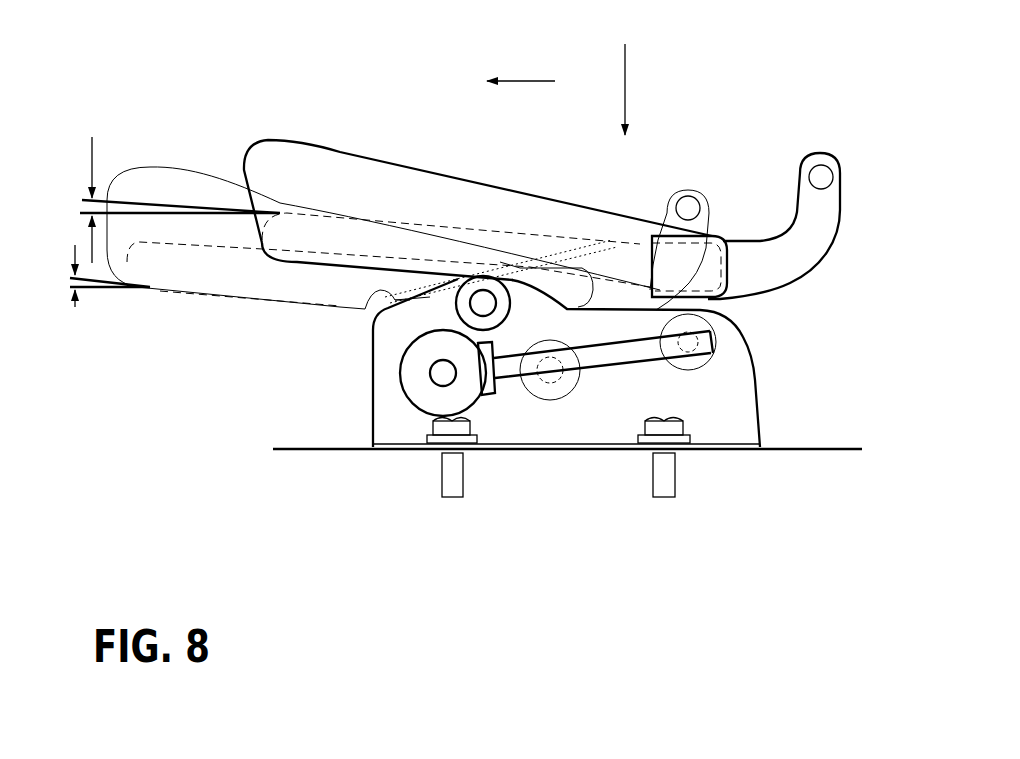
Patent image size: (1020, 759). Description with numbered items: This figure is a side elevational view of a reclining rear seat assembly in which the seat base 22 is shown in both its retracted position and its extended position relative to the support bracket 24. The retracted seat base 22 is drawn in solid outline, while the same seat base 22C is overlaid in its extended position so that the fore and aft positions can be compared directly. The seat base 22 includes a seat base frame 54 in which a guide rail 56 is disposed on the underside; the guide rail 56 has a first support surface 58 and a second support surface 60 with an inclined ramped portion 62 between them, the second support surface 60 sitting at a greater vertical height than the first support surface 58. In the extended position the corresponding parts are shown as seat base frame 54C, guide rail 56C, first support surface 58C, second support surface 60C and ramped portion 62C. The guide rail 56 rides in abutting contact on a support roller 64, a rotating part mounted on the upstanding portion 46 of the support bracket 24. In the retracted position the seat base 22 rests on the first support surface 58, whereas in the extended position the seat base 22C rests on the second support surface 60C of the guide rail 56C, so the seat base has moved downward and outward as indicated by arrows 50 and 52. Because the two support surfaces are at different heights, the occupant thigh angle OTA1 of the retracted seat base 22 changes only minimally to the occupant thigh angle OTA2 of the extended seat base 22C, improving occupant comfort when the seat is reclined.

The seat base 22 is at (257, 135).
The seat base 22C is at (142, 151).
The support bracket 24 is at (365, 410).
The upstanding portion 46 is at (732, 407).
The arrow 50 is at (626, 87).
The arrow 52 is at (523, 80).
The seat base frame 54 is at (303, 233).
The seat base frame 54C is at (185, 268).
The guide rail 56 is at (551, 253).
The guide rail 56C is at (403, 288).
The first support surface 58 is at (493, 267).
The first support surface 58C is at (337, 307).
The second support surface 60 is at (668, 208).
The second support surface 60C is at (480, 276).
The ramped portion 62 is at (578, 240).
The ramped portion 62C is at (373, 292).
The support roller 64 is at (440, 313).
The occupant thigh angle OTA1 is at (68, 200).
The occupant thigh angle OTA2 is at (66, 290).